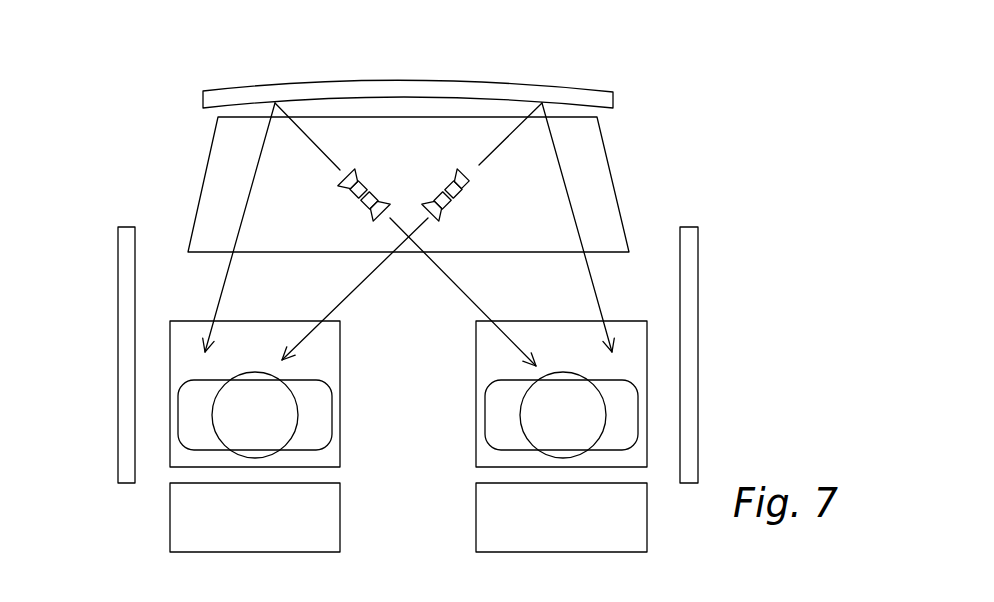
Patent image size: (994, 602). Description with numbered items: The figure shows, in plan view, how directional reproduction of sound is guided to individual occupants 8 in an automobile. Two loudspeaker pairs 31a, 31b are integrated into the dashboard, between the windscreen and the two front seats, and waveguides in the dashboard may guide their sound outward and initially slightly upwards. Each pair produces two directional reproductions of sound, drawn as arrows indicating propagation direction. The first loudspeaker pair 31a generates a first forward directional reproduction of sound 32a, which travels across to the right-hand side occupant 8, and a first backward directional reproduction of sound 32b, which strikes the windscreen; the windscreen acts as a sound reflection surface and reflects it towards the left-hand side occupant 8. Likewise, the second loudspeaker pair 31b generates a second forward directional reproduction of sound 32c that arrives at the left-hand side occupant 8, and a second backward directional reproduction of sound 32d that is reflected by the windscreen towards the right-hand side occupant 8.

The occupant 8 is at (485, 418).
The first loudspeaker pair 31a is at (377, 156).
The second loudspeaker pair 31b is at (438, 154).
The first forward directional reproduction of sound 32a is at (469, 299).
The first backward directional reproduction of sound 32b is at (227, 273).
The second forward directional reproduction of sound 32c is at (352, 295).
The second backward directional reproduction of sound 32d is at (597, 302).